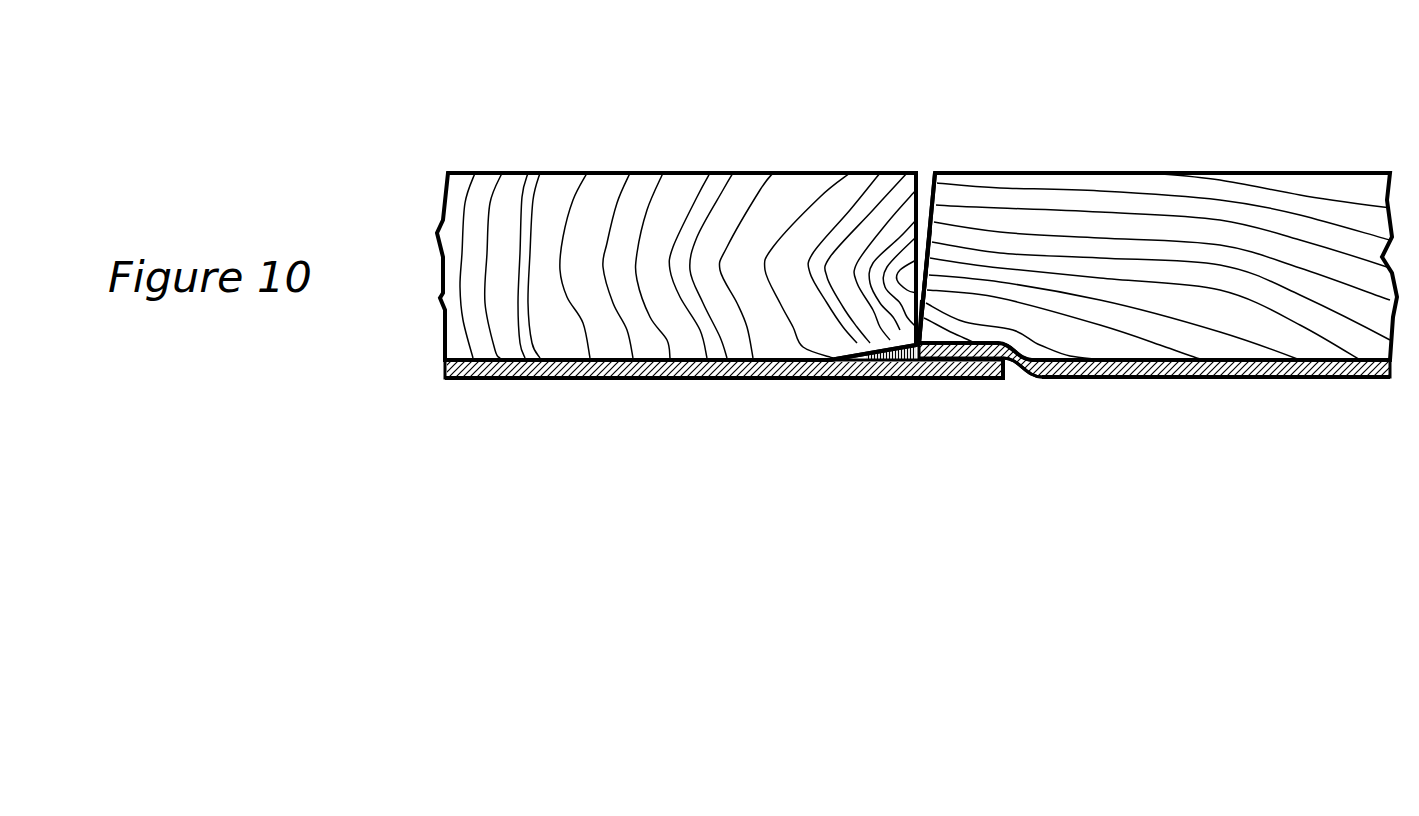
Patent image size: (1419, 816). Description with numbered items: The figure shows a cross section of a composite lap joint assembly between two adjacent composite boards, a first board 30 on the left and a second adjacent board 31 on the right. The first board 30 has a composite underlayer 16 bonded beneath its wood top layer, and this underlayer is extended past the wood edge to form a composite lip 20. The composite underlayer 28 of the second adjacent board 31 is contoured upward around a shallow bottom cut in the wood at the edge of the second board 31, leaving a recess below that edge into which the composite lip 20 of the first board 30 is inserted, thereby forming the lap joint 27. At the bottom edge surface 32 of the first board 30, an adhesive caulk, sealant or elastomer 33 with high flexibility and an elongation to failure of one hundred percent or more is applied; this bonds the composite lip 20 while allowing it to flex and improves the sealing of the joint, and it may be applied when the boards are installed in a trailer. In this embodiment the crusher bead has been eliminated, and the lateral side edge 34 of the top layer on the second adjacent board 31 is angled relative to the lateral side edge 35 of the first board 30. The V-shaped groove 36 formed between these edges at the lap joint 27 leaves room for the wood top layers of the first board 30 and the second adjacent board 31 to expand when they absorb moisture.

The composite underlayer 16 is at (609, 392).
The composite lip 20 is at (983, 392).
The lap joint 27 is at (917, 448).
The composite underlayer 28 is at (1152, 390).
The first board 30 is at (676, 266).
The second adjacent board 31 is at (1158, 266).
The bottom edge surface 32 is at (872, 334).
The adhesive caulk or sealant or elastomer 33 is at (885, 373).
The lateral side edge 34 is at (946, 268).
The lateral side edge 35 is at (903, 237).
The V-shaped groove 36 is at (941, 162).